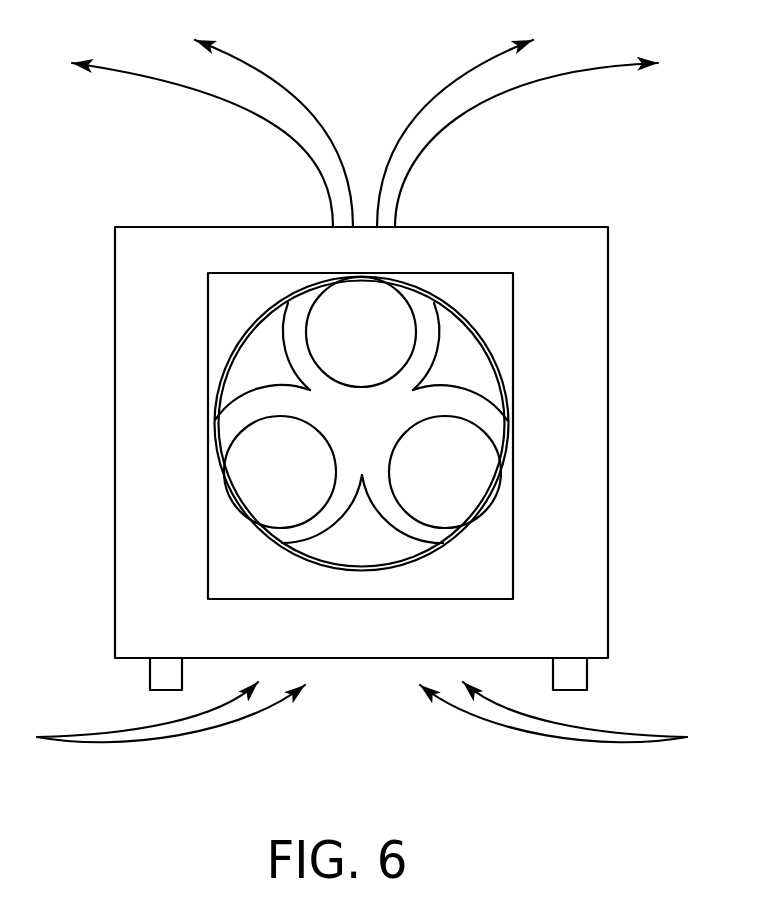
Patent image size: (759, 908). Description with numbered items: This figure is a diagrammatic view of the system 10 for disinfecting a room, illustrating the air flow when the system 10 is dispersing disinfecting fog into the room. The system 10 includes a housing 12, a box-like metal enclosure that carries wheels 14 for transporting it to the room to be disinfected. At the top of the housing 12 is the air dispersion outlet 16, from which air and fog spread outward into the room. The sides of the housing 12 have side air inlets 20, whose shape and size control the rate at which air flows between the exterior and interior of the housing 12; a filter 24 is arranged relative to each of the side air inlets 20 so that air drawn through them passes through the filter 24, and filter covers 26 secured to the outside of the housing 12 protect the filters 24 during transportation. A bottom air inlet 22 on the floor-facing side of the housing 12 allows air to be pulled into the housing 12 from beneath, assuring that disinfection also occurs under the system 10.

The system 10 is at (374, 408).
The housing 12 is at (127, 285).
The wheels 14 is at (150, 668).
The air dispersion outlet 16 is at (422, 207).
The side air inlets 20 is at (83, 500).
The bottom air inlet 22 is at (393, 668).
The filter 24 is at (457, 453).
The filter covers 26 is at (497, 320).